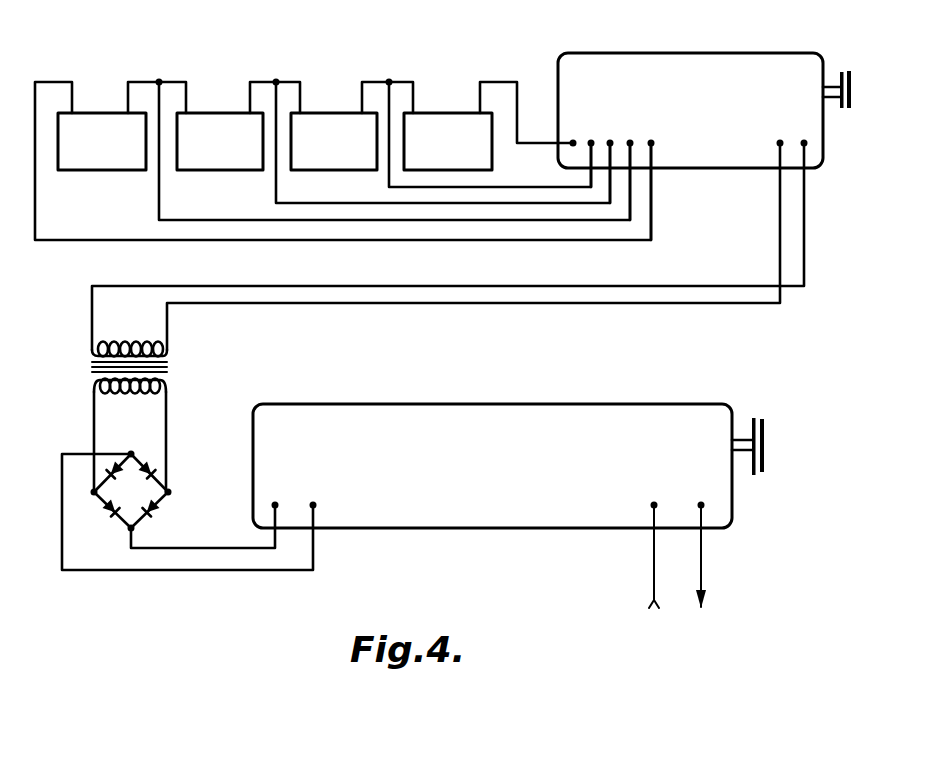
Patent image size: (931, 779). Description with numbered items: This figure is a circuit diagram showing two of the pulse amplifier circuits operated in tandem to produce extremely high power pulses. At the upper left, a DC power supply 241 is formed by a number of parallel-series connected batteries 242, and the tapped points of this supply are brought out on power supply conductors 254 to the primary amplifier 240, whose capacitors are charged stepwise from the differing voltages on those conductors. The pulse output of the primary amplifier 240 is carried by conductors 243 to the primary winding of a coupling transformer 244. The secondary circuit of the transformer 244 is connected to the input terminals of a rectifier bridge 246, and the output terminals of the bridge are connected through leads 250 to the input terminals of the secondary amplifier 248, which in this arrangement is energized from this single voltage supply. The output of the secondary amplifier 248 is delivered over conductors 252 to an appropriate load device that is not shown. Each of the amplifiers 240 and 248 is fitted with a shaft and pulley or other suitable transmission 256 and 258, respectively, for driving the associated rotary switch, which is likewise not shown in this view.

The primary amplifier 240 is at (677, 40).
The DC power supply 241 is at (345, 42).
The batteries 242 is at (202, 120).
The conductors 243 is at (535, 300).
The coupling transformer 244 is at (170, 368).
The rectifier bridge 246 is at (170, 475).
The secondary amplifier 248 is at (632, 404).
The leads 250 is at (190, 550).
The conductors 252 is at (657, 562).
The power supply conductors 254 is at (593, 174).
The transmission 256 is at (852, 108).
The transmission 258 is at (765, 430).